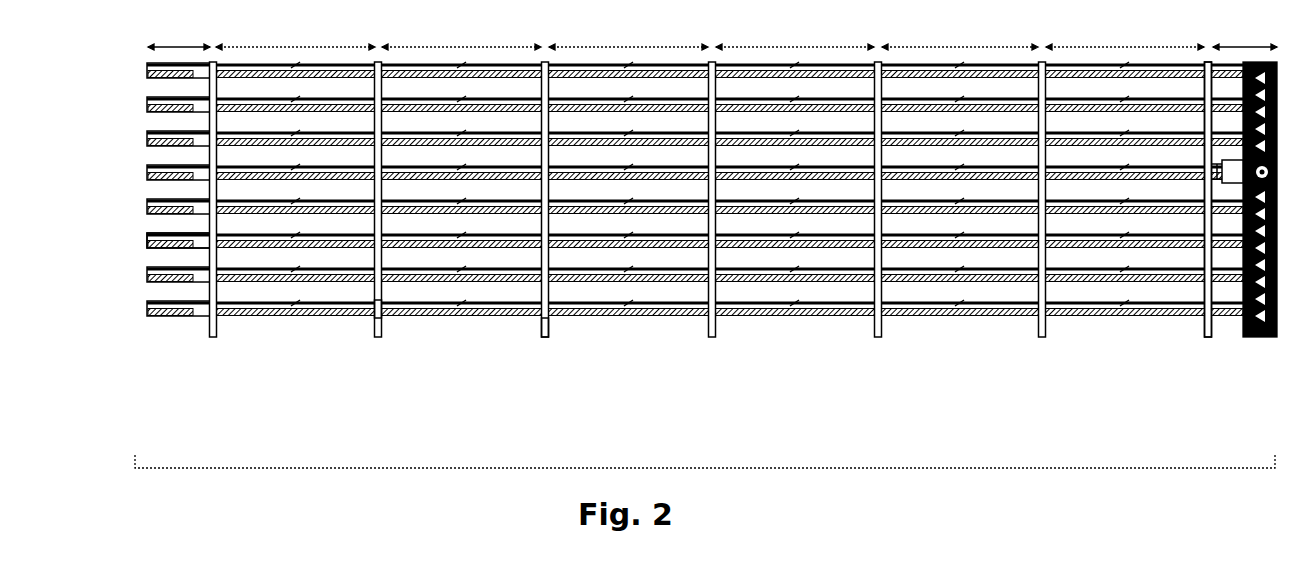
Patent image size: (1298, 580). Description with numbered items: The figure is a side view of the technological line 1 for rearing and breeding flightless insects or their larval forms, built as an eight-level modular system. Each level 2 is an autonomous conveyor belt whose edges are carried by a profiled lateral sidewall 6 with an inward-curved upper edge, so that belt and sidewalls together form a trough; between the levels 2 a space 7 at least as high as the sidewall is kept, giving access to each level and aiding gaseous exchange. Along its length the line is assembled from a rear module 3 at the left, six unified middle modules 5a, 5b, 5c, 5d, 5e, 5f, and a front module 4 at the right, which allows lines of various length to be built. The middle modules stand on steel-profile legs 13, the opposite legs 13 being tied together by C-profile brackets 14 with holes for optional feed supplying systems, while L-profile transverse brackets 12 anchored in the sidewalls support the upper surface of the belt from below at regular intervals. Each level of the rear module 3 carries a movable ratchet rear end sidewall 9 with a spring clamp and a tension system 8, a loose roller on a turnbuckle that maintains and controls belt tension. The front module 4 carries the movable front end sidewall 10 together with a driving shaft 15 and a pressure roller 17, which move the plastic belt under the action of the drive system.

The technological line 1 is at (705, 470).
The level 2 is at (129, 220).
The rear module 3 is at (179, 37).
The front module 4 is at (1245, 37).
The middle module 5a is at (295, 37).
The middle module 5b is at (461, 37).
The middle module 5c is at (628, 37).
The middle module 5d is at (795, 37).
The middle module 5e is at (960, 37).
The middle module 5f is at (1125, 37).
The profiled lateral sidewall 6 is at (322, 307).
The space 7 is at (430, 299).
The tension system 8 is at (167, 316).
The rear end sidewall 9 is at (197, 240).
The front end sidewall 10 is at (1198, 318).
The transverse bracket 12 is at (361, 316).
The leg 13 is at (546, 338).
The bracket 14 is at (389, 318).
The driving shaft 15 is at (1232, 318).
The pressure roller 17 is at (1253, 338).